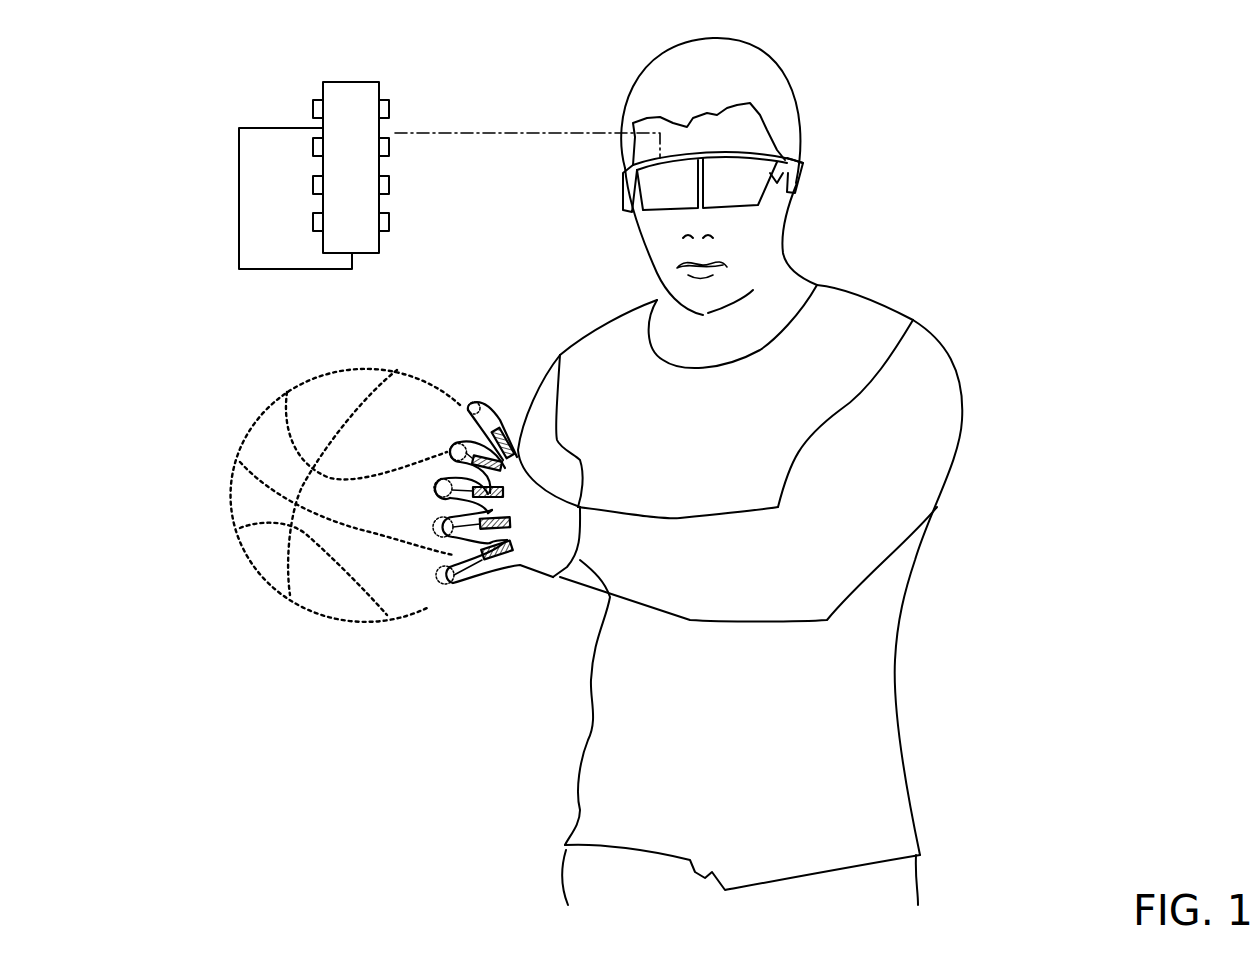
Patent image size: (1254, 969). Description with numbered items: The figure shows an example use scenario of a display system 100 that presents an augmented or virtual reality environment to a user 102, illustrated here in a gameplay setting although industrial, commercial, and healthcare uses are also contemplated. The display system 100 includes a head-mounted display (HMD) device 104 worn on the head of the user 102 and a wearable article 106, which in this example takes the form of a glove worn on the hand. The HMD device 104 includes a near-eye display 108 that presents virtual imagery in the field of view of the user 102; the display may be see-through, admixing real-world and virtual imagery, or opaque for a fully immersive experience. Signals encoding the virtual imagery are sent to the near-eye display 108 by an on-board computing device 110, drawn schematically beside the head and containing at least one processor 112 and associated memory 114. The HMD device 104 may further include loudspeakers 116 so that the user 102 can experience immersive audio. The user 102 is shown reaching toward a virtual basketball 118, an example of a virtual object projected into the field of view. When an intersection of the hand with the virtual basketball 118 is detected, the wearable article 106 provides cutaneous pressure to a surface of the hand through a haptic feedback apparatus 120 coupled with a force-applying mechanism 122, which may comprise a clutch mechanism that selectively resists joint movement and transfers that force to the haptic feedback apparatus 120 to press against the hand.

The display system 100 is at (165, 348).
The user 102 is at (830, 814).
The head-mounted display (HMD) device 104 is at (593, 189).
The wearable article 106 is at (607, 543).
The near-eye display 108 is at (684, 203).
The on-board computing device 110 is at (238, 81).
The processor 112 is at (281, 270).
The memory 114 is at (350, 82).
The loudspeakers 116 is at (800, 169).
The virtual basketball 118 is at (398, 576).
The haptic feedback apparatus 120 is at (450, 580).
The force-applying mechanism 122 is at (497, 553).